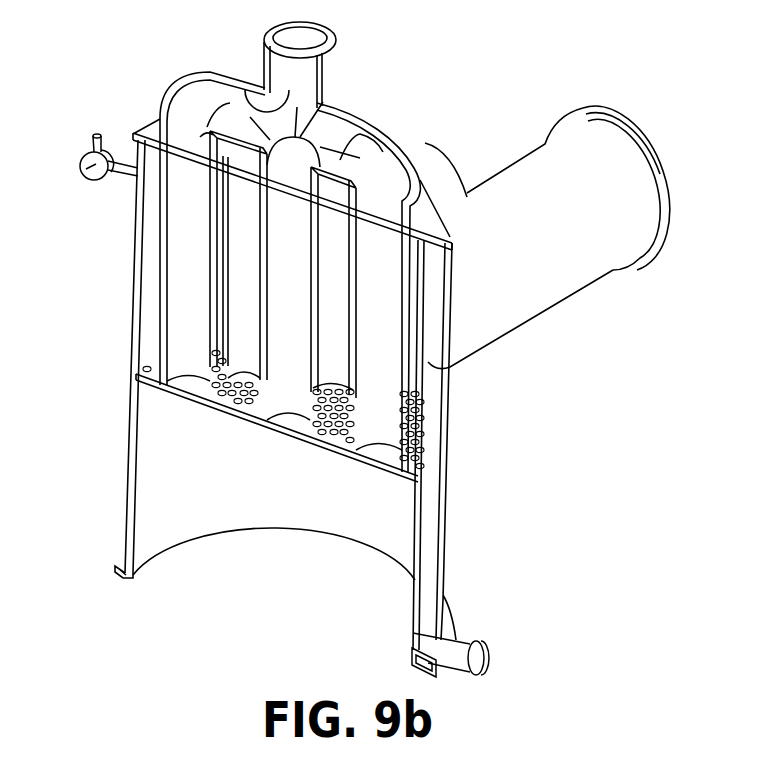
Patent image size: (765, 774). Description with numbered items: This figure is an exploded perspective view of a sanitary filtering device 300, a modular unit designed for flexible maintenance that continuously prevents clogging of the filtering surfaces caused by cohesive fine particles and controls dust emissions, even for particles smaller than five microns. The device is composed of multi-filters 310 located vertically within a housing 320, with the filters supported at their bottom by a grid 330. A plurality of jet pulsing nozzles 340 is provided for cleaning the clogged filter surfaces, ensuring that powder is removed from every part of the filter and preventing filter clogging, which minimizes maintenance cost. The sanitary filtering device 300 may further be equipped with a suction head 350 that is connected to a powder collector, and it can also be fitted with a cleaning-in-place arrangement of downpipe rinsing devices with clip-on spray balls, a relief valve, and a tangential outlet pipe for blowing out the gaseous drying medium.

The sanitary filtering device 300 is at (475, 60).
The multi-filters 310 is at (137, 270).
The housing 320 is at (292, 503).
The grid 330 is at (443, 503).
The jet pulsing nozzles 340 is at (127, 160).
The suction head 350 is at (450, 672).